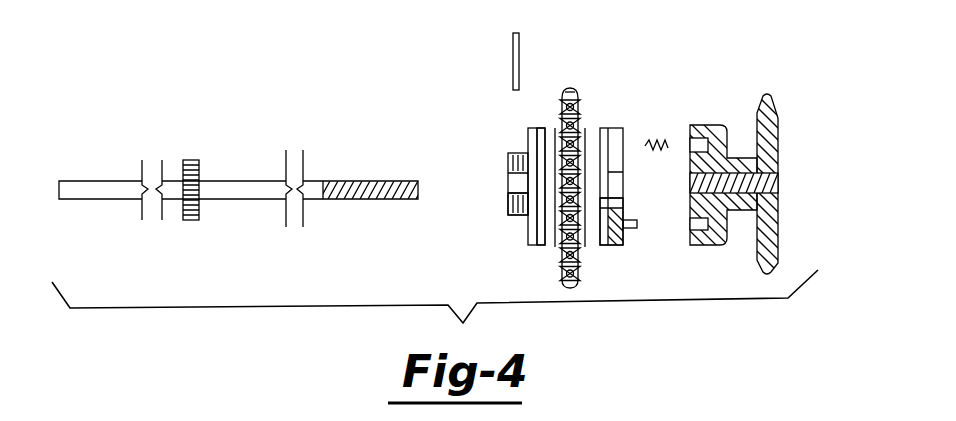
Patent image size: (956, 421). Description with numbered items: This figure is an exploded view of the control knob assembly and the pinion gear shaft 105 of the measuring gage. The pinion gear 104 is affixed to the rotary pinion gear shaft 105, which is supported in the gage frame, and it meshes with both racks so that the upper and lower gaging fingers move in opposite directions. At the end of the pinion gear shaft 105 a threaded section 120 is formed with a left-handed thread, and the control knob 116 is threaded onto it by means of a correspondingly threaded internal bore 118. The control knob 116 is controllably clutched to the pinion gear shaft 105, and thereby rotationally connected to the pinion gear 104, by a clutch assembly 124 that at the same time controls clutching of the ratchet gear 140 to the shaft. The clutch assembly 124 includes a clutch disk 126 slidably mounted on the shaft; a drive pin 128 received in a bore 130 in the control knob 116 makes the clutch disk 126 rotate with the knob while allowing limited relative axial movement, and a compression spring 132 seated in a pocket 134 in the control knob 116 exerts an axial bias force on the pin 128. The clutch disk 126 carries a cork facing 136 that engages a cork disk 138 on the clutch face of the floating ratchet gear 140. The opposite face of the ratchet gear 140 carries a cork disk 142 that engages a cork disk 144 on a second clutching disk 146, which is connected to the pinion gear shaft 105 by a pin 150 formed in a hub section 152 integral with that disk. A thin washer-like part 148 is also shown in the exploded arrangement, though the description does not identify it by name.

The pinion gear shaft 105 is at (83, 184).
The pinion gear 104 is at (193, 162).
The threaded section 120 is at (346, 179).
The washer plate 148 is at (512, 57).
The ratchet gear 140 is at (567, 90).
The cork disk 142 is at (558, 125).
The second clutching disk 146 is at (528, 130).
The cork disk 144 is at (544, 246).
The pin 150 is at (506, 155).
The hub section 152 is at (508, 213).
The cork disk 138 is at (591, 128).
The cork facing 136 is at (600, 246).
The drive pin 128 is at (637, 230).
The clutch assembly 124 is at (749, 174).
The clutch disk 126 is at (749, 174).
The compression spring 132 is at (628, 140).
The pocket 134 is at (697, 144).
The bore 130 is at (697, 225).
The control knob 116 is at (780, 130).
The internal bore 118 is at (778, 183).